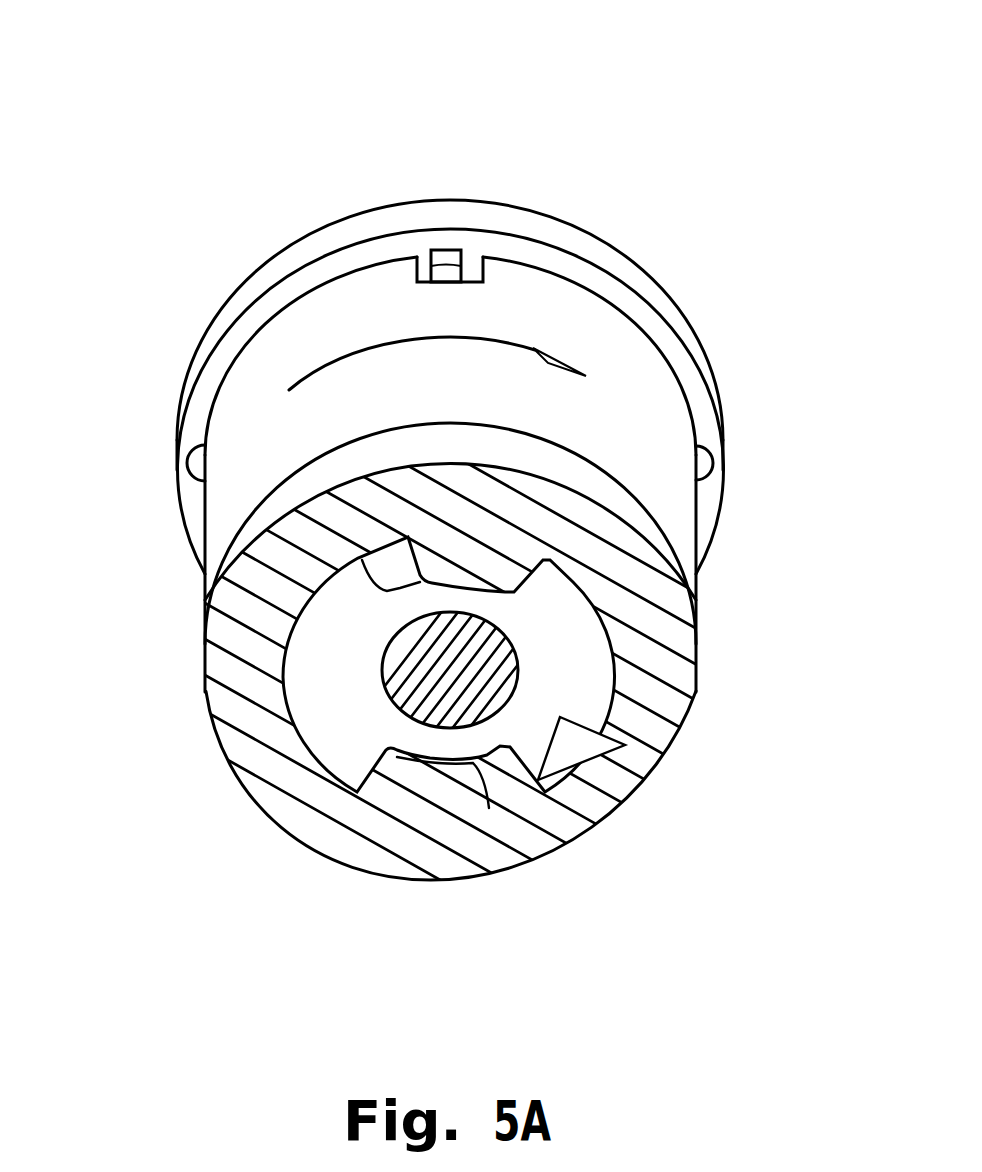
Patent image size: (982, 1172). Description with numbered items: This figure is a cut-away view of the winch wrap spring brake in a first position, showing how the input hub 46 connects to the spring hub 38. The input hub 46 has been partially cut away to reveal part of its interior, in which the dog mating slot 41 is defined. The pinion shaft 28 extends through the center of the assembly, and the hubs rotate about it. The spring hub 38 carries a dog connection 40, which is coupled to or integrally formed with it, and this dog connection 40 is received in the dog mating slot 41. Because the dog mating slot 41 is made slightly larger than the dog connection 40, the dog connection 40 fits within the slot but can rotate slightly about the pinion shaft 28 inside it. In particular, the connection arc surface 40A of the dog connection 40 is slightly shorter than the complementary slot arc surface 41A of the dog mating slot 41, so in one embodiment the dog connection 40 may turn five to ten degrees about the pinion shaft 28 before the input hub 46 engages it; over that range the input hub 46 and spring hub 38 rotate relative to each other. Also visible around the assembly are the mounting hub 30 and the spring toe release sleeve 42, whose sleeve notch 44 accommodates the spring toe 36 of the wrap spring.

The pinion shaft 28 is at (402, 705).
The mounting hub 30 is at (355, 232).
The spring toe 36 is at (445, 255).
The spring hub 38 is at (332, 658).
The dog connection 40 is at (536, 627).
The connection arc surface 40A is at (560, 717).
The dog mating slot 41 is at (390, 562).
The slot arc surface 41A is at (535, 795).
The spring toe release sleeve 42 is at (381, 301).
The sleeve notch 44 is at (472, 265).
The input hub 46 is at (560, 465).